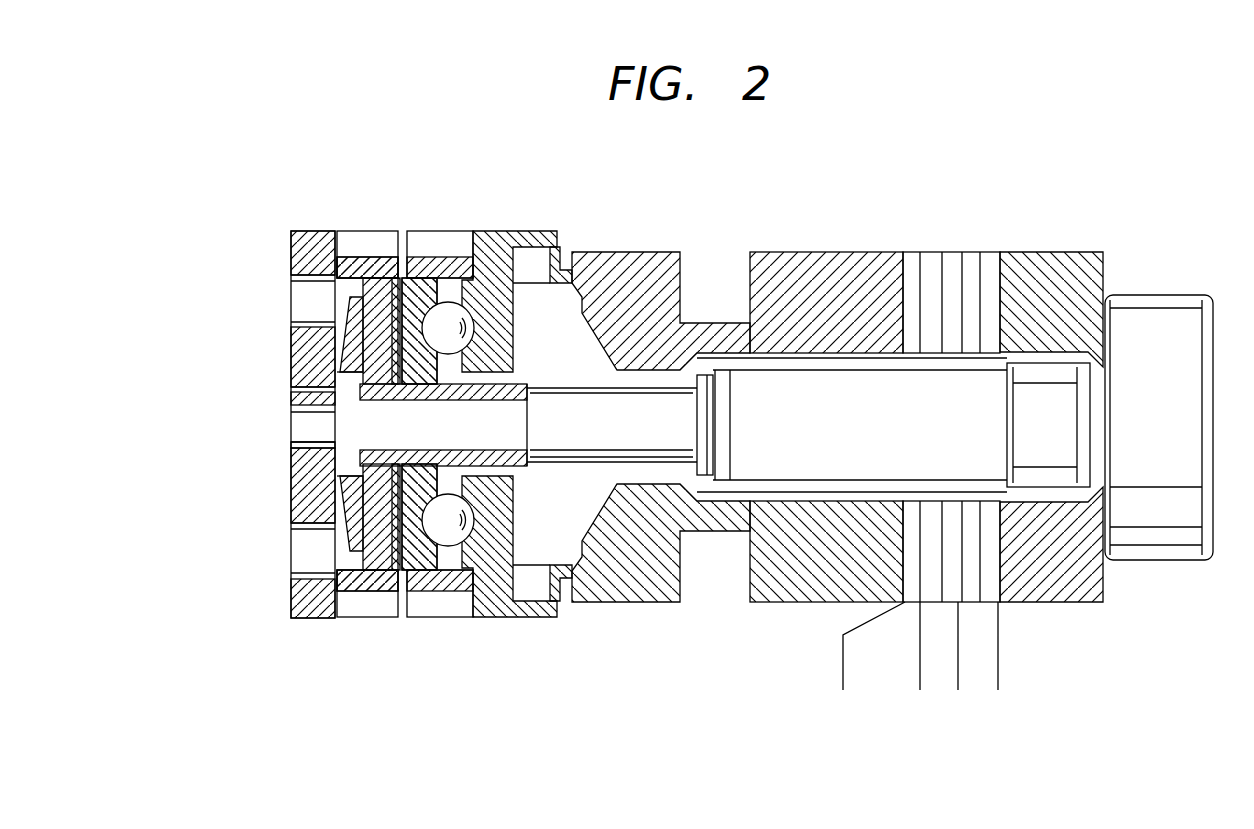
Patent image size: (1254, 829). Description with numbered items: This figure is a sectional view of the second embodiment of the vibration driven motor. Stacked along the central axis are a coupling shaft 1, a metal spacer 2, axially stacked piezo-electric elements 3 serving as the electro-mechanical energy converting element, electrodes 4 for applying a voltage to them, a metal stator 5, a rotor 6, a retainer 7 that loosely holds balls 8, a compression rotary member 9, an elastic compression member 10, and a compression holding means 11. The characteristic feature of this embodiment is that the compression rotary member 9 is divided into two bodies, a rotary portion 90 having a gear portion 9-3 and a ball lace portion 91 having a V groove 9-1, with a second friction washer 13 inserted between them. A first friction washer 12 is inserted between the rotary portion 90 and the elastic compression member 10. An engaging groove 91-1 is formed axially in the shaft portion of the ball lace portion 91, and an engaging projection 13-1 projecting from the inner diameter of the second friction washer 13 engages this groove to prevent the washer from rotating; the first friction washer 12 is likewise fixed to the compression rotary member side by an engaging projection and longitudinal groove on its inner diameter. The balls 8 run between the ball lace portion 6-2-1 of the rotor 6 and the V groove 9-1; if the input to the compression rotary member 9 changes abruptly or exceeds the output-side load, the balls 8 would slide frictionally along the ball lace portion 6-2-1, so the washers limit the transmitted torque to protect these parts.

The coupling shaft 1 is at (1190, 330).
The metal spacer 2 is at (1045, 270).
The piezo-electric elements 3 is at (1000, 232).
The electrodes 4 is at (1000, 706).
The metal stator 5 is at (850, 270).
The rotor 6 is at (536, 231).
The ball lace portion 6-2-1 is at (508, 617).
The retainer 7 is at (455, 231).
The balls 8 is at (470, 318).
The compression rotary member 9 is at (383, 231).
The V groove 9-1 is at (417, 231).
The gear portion 9-3 is at (390, 617).
The elastic compression member 10 is at (345, 330).
The compression holding means 11 is at (305, 231).
The first friction washer 12 is at (340, 618).
The second friction washer 13 is at (352, 617).
The engaging projection 13-1 is at (292, 463).
The rotary portion 90 is at (360, 257).
The ball lace portion 91 is at (432, 617).
The engaging groove 91-1 is at (292, 392).